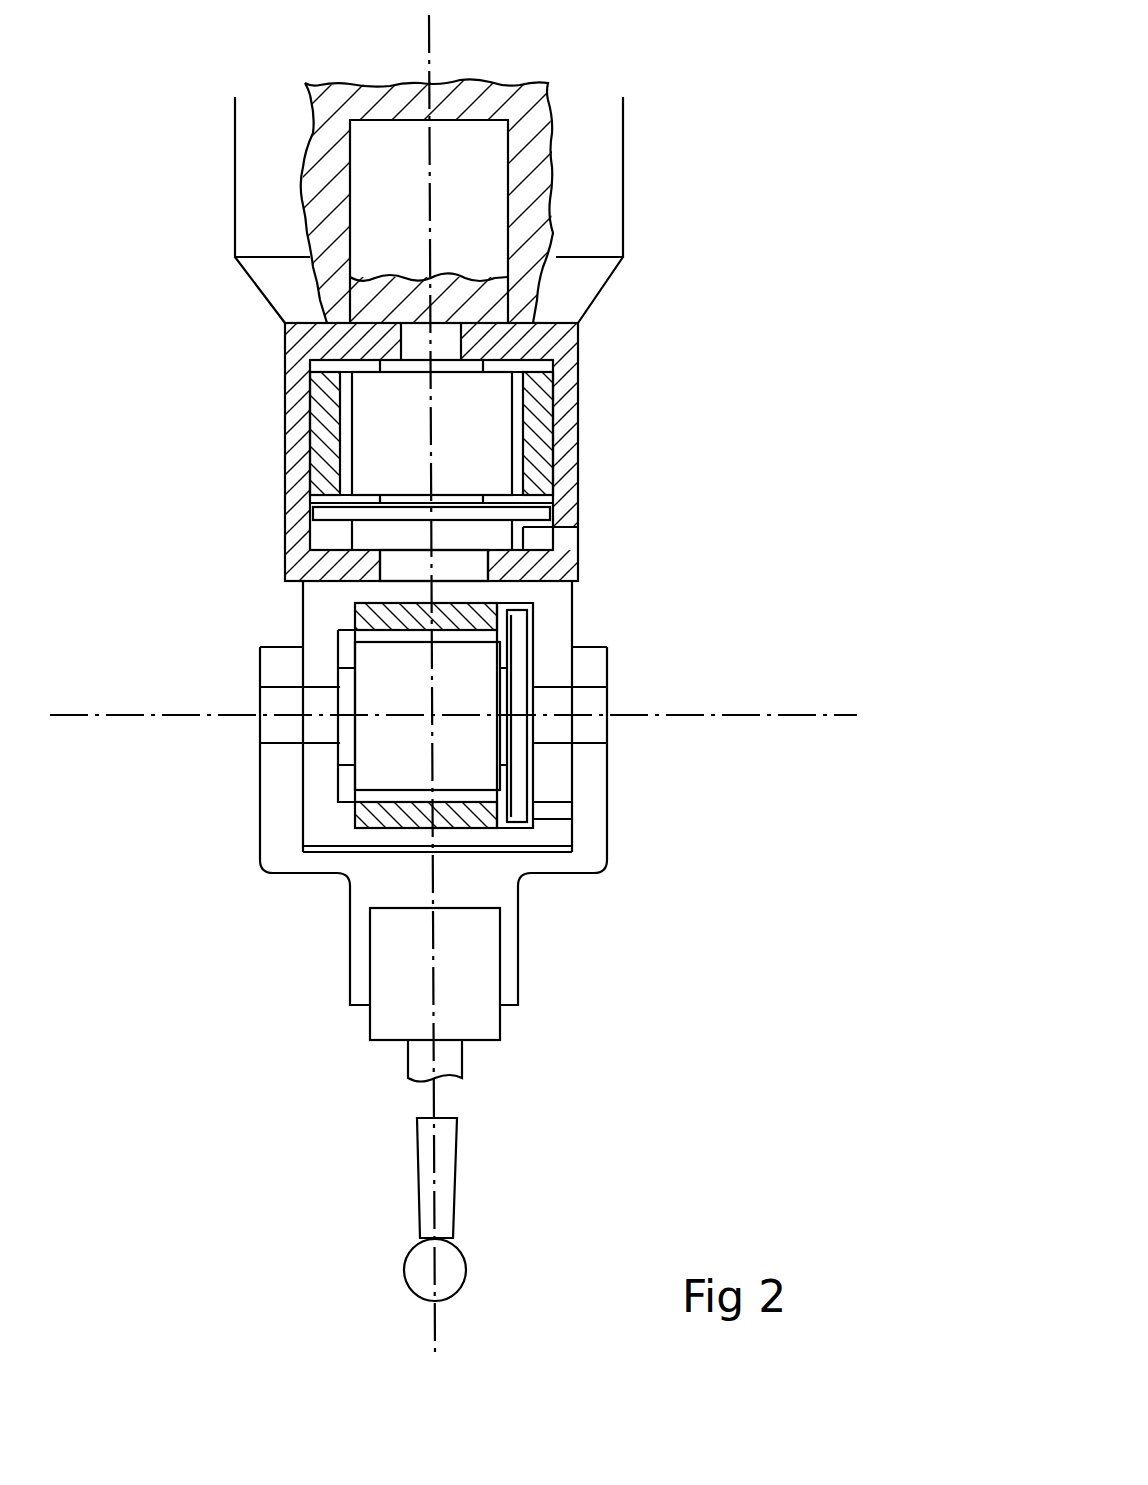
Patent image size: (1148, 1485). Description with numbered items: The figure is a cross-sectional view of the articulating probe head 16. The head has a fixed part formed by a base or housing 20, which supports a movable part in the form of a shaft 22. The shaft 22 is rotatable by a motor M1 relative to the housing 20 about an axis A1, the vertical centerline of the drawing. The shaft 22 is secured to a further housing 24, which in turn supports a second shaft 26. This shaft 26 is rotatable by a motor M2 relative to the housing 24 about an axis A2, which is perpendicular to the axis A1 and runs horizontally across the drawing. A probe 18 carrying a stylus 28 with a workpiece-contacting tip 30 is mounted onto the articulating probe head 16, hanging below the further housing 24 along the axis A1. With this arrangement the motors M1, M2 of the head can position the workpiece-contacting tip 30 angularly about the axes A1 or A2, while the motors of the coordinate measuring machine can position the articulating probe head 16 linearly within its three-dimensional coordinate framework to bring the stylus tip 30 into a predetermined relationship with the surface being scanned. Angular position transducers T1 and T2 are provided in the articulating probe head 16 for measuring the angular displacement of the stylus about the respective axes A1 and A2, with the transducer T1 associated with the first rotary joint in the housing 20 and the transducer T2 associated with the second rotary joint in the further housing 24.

The articulating probe head 16 is at (753, 373).
The probe 18 is at (500, 957).
The housing 20 is at (287, 442).
The shaft 22 is at (405, 563).
The further housing 24 is at (573, 612).
The shaft 26 is at (557, 745).
The stylus 28 is at (458, 1180).
The workpiece-contacting tip 30 is at (403, 1273).
The motor M1 is at (485, 433).
The motor M2 is at (392, 763).
The angular position transducer T1 is at (313, 513).
The angular position transducer T2 is at (517, 803).
The axis A1 is at (480, 700).
The axis A2 is at (491, 743).